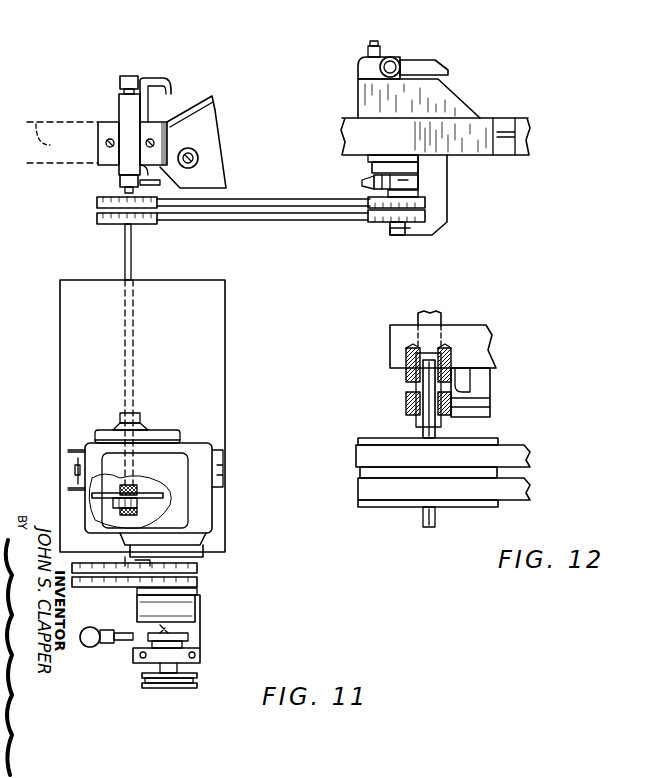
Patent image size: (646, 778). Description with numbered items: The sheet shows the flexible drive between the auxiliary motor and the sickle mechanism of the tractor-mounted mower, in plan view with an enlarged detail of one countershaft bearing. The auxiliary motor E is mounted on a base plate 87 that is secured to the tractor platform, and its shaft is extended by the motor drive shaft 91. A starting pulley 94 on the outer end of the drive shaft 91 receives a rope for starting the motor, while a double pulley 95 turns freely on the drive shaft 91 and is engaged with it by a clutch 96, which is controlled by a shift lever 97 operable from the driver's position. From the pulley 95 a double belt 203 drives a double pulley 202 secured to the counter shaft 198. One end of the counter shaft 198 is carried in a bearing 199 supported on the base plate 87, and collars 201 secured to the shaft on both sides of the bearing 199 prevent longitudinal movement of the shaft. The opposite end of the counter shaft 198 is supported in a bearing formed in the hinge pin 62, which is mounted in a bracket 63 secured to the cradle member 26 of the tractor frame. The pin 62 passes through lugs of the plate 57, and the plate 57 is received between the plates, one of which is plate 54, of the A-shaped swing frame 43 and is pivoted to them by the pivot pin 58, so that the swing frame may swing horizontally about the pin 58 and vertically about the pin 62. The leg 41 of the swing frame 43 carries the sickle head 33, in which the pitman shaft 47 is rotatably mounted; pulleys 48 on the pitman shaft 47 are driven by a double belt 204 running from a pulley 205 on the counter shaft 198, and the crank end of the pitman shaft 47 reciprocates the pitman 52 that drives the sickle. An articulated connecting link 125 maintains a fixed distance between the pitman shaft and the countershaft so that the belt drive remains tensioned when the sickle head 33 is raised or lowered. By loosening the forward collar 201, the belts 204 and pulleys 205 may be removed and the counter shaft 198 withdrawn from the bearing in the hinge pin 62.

In FIG. 11, the pivot pin 62 is at (130, 75).
In FIG. 12, the pivot pin 62 is at (440, 318).
In FIG. 11, the bracket 63 is at (108, 155).
In FIG. 12, the bracket 63 is at (398, 348).
In FIG. 11, the plate 57 is at (175, 97).
In FIG. 12, the plate 57 is at (480, 391).
In FIG. 11, the plate 54 is at (213, 123).
In FIG. 11, the pivot pin 58 is at (198, 155).
In FIG. 11, the cradle member 26 is at (62, 142).
In FIG. 11, the pulley 205 is at (103, 226).
In FIG. 12, the pulley 205 is at (388, 507).
In FIG. 11, the double belt 204 is at (273, 201).
In FIG. 12, the double belt 204 is at (528, 489).
In FIG. 11, the counter shaft 198 is at (132, 259).
In FIG. 12, the counter shaft 198 is at (421, 432).
In FIG. 11, the pitman 52 is at (428, 62).
In FIG. 11, the swing frame 43 is at (352, 114).
In FIG. 11, the leg of swing frame 41 is at (352, 143).
In FIG. 11, the connecting link 125 is at (360, 182).
In FIG. 11, the sickle head 33 is at (452, 197).
In FIG. 11, the pulleys 48 is at (373, 225).
In FIG. 11, the pitman shaft 47 is at (392, 232).
In FIG. 11, the base plate 87 is at (213, 389).
In FIG. 11, the auxiliary motor E is at (160, 470).
In FIG. 11, the collars 201 is at (138, 487).
In FIG. 11, the bearing 199 is at (140, 498).
In FIG. 11, the double belt 203 is at (197, 582).
In FIG. 11, the double pulley 202 is at (80, 588).
In FIG. 11, the double pulley 95 is at (197, 591).
In FIG. 11, the clutch 96 is at (186, 609).
In FIG. 11, the motor drive shaft 91 is at (170, 645).
In FIG. 11, the shift lever 97 is at (90, 643).
In FIG. 11, the starting pulley 94 is at (168, 685).